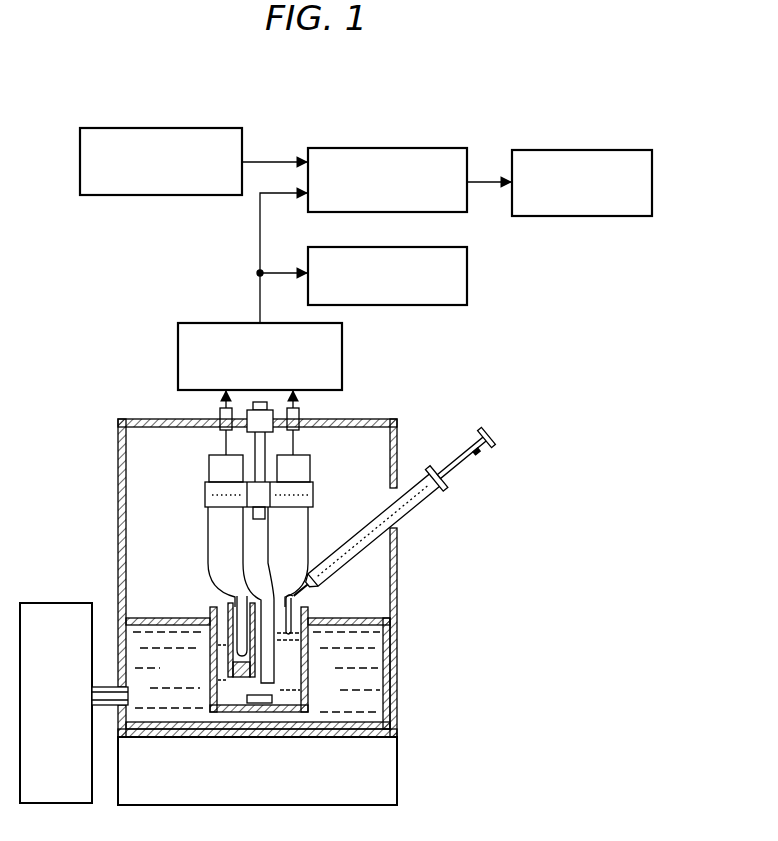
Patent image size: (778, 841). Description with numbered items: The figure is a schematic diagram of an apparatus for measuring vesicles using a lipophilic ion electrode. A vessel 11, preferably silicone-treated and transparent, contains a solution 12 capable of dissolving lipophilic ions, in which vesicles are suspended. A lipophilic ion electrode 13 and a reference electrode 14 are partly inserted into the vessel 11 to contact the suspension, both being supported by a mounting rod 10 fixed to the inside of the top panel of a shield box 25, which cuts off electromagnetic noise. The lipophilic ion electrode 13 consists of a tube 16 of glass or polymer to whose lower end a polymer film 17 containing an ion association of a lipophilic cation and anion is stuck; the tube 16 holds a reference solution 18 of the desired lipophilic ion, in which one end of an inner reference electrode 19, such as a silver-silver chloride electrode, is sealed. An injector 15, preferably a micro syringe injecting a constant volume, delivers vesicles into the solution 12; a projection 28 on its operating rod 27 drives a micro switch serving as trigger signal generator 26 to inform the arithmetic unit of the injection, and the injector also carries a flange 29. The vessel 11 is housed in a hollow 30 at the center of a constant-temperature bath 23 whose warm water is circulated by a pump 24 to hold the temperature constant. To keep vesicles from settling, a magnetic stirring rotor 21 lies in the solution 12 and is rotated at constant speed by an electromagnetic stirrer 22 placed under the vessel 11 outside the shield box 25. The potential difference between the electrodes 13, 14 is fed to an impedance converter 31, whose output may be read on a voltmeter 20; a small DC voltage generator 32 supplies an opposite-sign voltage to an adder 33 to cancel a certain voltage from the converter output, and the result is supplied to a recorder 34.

The mounting rod 10 is at (259, 519).
The vessel 11 is at (216, 660).
The solution 12 is at (282, 680).
The lipophilic ion electrode 13 is at (209, 466).
The reference electrode 14 is at (310, 464).
The injector 15 is at (384, 560).
The tube 16 is at (235, 600).
The polymer film 17 is at (241, 678).
The reference solution 18 is at (226, 612).
The reference electrode 19 is at (208, 530).
The voltmeter 20 is at (420, 305).
The stirring rotor 21 is at (272, 698).
The electromagnetic stirrer 22 is at (385, 778).
The constant-temperature bath 23 is at (390, 672).
The pump 24 is at (58, 603).
The shield box 25 is at (398, 600).
The trigger signal generator 26 is at (417, 522).
The operating rod 27 is at (454, 448).
The projection 28 is at (484, 457).
The flange 29 is at (442, 478).
The hollow 30 is at (295, 602).
The impedance converter 31 is at (178, 356).
The DC voltage generator 32 is at (186, 128).
The adder 33 is at (412, 148).
The recorder 34 is at (600, 150).